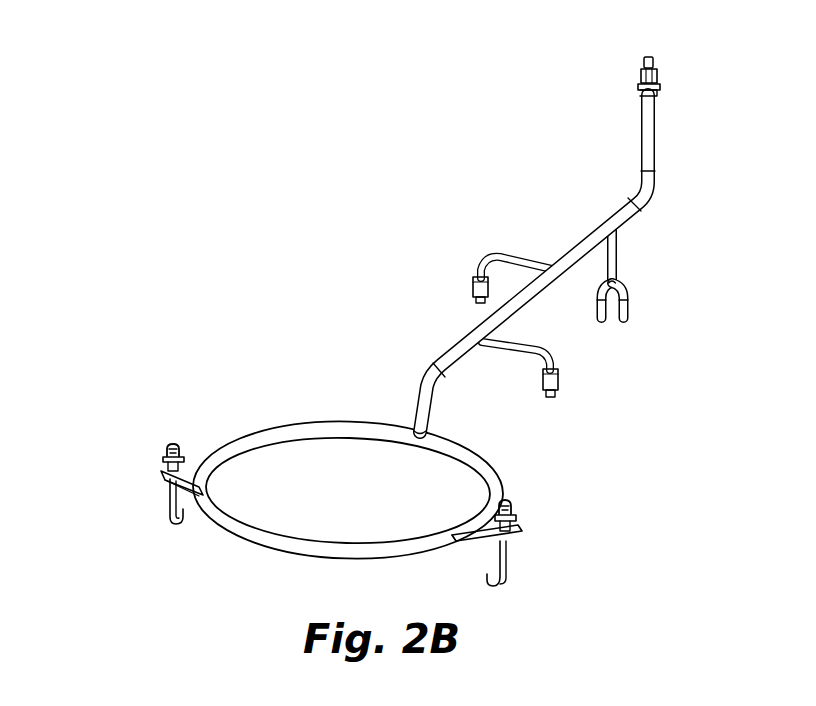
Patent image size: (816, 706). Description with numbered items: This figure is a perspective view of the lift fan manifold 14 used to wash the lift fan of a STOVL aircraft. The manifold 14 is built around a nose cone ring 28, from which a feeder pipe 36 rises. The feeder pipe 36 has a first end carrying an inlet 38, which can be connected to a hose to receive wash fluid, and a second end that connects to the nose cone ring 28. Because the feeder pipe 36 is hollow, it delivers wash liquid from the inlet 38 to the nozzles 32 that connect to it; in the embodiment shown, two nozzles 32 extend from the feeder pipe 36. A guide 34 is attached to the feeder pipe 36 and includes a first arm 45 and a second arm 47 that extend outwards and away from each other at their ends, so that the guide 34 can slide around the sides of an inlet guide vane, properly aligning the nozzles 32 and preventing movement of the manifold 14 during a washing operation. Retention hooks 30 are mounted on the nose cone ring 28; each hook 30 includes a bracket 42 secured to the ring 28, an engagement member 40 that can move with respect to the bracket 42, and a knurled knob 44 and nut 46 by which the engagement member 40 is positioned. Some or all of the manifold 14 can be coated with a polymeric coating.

The lift fan manifold 14 is at (279, 266).
The nose cone ring 28 is at (348, 470).
The retention hooks 30 is at (404, 497).
The nozzles 32 is at (472, 277).
The guide 34 is at (638, 292).
The feeder pipe 36 is at (602, 227).
The inlet 38 is at (655, 62).
The engagement member 40 is at (168, 500).
The bracket 42 is at (192, 452).
The knurled knob 44 is at (164, 459).
The first arm 45 is at (626, 310).
The nut 46 is at (173, 443).
The second arm 47 is at (598, 308).